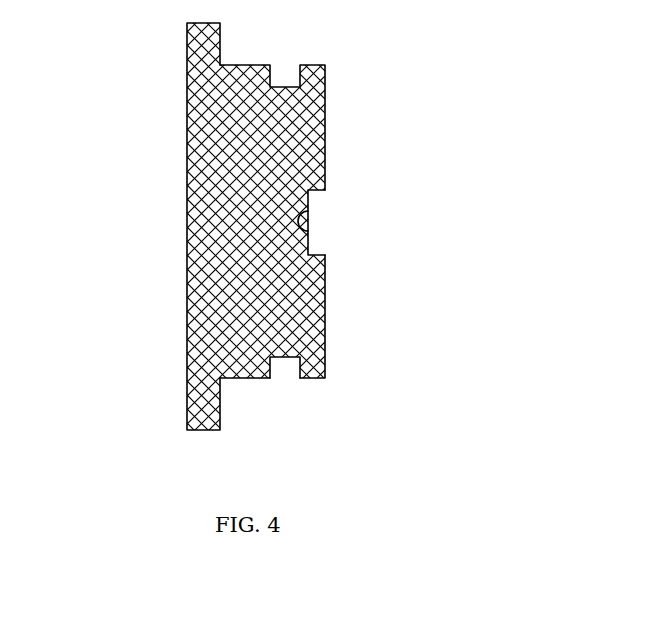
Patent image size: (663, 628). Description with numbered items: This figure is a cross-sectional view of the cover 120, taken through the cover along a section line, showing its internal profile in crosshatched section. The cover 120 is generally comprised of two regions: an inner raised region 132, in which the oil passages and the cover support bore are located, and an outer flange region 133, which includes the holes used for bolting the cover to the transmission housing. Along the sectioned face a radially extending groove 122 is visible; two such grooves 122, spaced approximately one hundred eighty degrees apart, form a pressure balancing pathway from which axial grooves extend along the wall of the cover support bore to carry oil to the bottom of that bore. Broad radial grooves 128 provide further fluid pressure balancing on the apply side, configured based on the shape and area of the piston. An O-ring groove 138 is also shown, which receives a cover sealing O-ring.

The cover 120 is at (452, 121).
The radially extending grooves 122 is at (311, 222).
The broad radial grooves 128 is at (328, 202).
The inner raised region 132 is at (326, 91).
The outer flange region 133 is at (187, 407).
The O-ring groove 138 is at (293, 378).